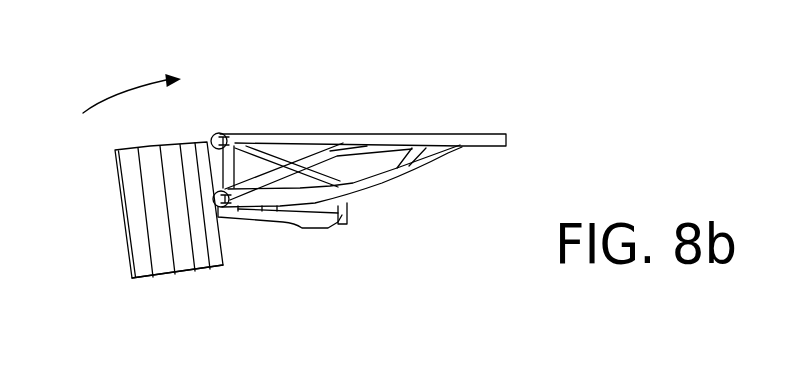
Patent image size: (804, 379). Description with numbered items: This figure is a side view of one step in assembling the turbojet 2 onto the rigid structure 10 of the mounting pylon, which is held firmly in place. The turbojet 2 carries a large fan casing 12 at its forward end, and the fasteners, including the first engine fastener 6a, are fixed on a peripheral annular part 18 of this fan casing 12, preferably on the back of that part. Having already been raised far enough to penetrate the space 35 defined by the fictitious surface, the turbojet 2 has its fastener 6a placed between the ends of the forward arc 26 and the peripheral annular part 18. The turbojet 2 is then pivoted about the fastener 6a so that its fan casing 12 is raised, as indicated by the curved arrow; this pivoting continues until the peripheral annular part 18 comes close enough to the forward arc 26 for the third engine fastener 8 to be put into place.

The turbojet 2 is at (278, 281).
The first engine fastener 6a is at (214, 197).
The third engine fastener 8 is at (219, 133).
The rigid structure 10 is at (469, 113).
The fan casing 12 is at (158, 216).
The peripheral annular part 18 is at (222, 254).
The forward arc 26 is at (272, 152).
The space 35 is at (374, 163).